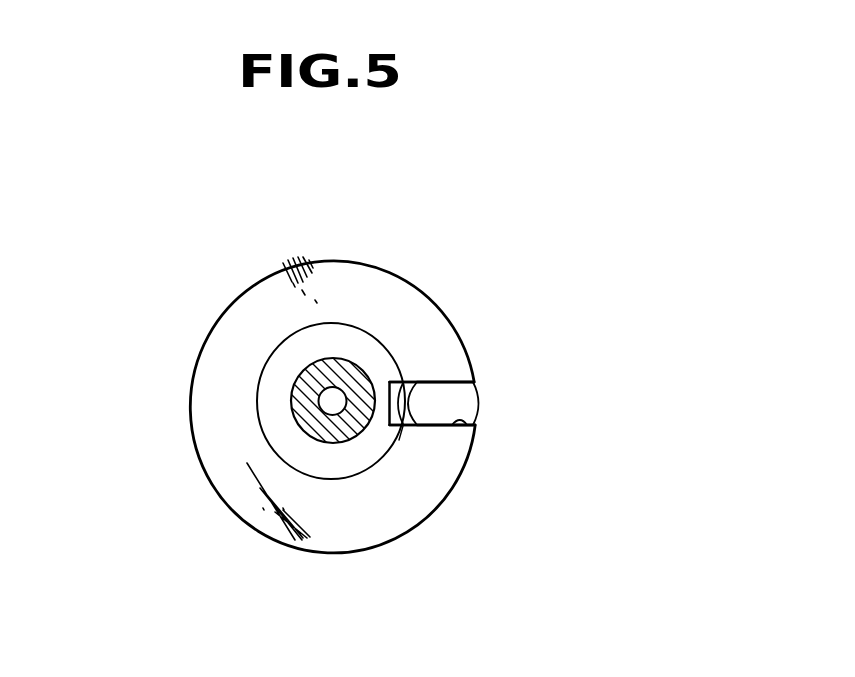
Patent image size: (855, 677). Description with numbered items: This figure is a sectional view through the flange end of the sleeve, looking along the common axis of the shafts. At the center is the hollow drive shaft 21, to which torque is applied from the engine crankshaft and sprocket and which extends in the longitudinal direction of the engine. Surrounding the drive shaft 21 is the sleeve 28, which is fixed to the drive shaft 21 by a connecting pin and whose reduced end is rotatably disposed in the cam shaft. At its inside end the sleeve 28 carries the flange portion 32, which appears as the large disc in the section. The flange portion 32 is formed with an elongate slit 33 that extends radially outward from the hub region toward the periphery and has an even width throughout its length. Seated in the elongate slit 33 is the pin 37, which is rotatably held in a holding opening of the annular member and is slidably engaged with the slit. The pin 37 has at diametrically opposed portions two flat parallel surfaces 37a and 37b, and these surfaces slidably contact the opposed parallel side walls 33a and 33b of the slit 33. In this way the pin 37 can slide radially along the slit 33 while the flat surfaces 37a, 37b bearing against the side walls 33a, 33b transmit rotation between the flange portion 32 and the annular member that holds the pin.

The drive shaft 21 is at (300, 386).
The sleeve 28 is at (259, 420).
The flange portion 32 is at (350, 540).
The elongate slit 33 is at (401, 383).
The side wall of slit 33a is at (473, 392).
The side wall of slit 33b is at (472, 424).
The pin 37 is at (474, 403).
The flat parallel surface 37a is at (433, 381).
The flat parallel surface 37b is at (432, 425).